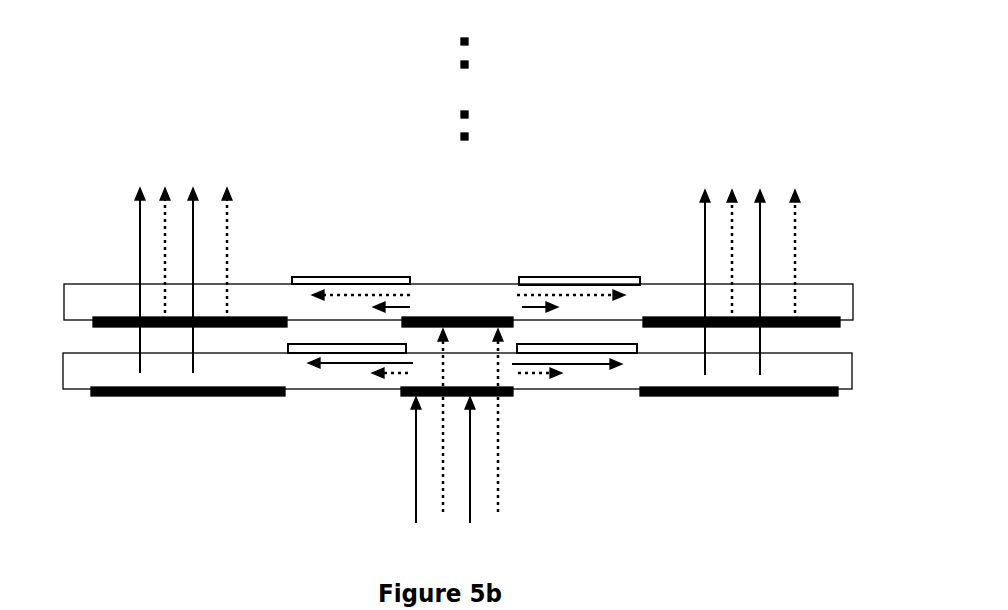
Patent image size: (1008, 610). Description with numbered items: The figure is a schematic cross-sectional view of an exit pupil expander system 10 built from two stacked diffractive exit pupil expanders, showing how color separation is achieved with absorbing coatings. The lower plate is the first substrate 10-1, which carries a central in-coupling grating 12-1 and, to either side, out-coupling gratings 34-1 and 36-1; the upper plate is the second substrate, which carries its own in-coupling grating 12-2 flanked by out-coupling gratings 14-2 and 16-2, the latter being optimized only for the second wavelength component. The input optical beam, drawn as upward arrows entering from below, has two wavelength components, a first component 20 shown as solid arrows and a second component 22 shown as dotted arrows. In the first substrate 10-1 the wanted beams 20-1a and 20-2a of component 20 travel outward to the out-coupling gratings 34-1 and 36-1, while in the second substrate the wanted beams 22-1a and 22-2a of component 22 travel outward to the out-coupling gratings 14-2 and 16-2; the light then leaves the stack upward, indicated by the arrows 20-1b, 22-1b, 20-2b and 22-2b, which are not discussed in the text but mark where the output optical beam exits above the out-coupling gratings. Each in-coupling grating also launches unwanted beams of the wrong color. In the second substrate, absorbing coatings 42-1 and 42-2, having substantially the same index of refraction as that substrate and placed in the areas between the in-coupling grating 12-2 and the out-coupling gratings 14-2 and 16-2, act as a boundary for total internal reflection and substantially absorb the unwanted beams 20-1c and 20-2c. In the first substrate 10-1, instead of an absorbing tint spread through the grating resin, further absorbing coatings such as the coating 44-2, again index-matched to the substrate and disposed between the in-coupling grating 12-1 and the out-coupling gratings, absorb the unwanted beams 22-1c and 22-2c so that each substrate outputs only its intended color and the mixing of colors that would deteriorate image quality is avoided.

The exit pupil expander system 10 is at (523, 96).
The first substrate 10-1 is at (92, 368).
The in-coupling grating 12-1 is at (503, 397).
The in-coupling grating 12-2 is at (468, 318).
The out-coupling grating 14-2 is at (127, 317).
The out-coupling grating 16-2 is at (812, 317).
The wavelength component 20 is at (413, 497).
The wavelength component 22 is at (497, 502).
The optical beam 20-1a is at (333, 365).
The first signal left output 20-1b is at (139, 237).
The unwanted optical beam 20-1c is at (392, 307).
The optical beam 20-2a is at (597, 367).
The first signal right output 20-2b is at (705, 200).
The unwanted optical beam 20-2c is at (542, 307).
The optical beam 22-1a is at (337, 283).
The second signal left output 22-1b is at (228, 220).
The unwanted optical beam 22-1c is at (395, 375).
The optical beam 22-2a is at (587, 295).
The second signal right output 22-2b is at (793, 215).
The unwanted optical beam 22-2c is at (540, 375).
The out-coupling grating 34-1 is at (178, 397).
The out-coupling grating 36-1 is at (767, 397).
The absorbing coating 42-1 is at (372, 275).
The absorbing coating 42-2 is at (562, 273).
The absorbing coating 44-2 is at (292, 355).